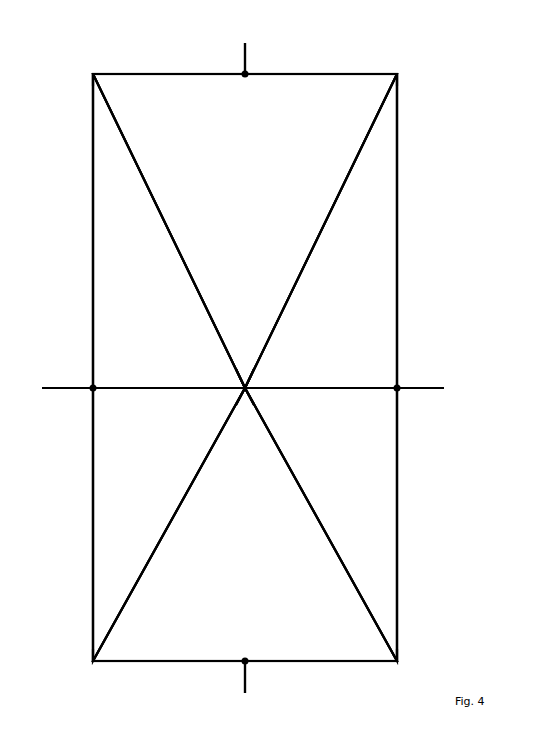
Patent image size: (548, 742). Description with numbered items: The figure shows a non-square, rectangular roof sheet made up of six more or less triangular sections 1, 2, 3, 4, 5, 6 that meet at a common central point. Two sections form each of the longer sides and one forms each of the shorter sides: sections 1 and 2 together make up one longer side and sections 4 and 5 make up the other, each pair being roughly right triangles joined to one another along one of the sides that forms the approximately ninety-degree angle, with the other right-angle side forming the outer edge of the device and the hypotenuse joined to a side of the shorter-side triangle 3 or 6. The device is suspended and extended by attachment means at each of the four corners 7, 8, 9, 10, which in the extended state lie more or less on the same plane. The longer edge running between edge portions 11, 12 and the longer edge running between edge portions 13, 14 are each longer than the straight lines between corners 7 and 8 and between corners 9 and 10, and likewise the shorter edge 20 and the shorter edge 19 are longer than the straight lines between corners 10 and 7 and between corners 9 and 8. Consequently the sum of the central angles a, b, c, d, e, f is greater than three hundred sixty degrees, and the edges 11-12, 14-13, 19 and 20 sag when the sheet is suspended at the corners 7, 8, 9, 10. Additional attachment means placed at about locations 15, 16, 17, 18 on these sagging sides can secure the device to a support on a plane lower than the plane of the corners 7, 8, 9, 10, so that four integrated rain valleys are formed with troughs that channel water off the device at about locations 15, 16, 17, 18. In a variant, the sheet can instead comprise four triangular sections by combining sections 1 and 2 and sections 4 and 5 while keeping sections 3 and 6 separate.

The triangular section 1 is at (321, 231).
The triangular section 2 is at (321, 524).
The triangular section 3 is at (245, 524).
The triangular section 4 is at (169, 524).
The triangular section 5 is at (169, 231).
The triangular section 6 is at (245, 231).
The corner 7 is at (399, 77).
The corner 8 is at (399, 658).
The corner 9 is at (92, 659).
The corner 10 is at (88, 75).
The edge portion 11 is at (401, 250).
The edge portion 12 is at (401, 430).
The edge portion 13 is at (87, 429).
The edge portion 14 is at (90, 247).
The attachment location 15 is at (437, 388).
The attachment location 16 is at (56, 388).
The attachment location 17 is at (245, 47).
The attachment location 18 is at (246, 692).
The edge 19 is at (280, 670).
The edge 20 is at (343, 68).
The angle a is at (245, 372).
The angle b is at (256, 378).
The angle c is at (255, 398).
The angle d is at (245, 403).
The angle e is at (234, 398).
The angle f is at (234, 378).